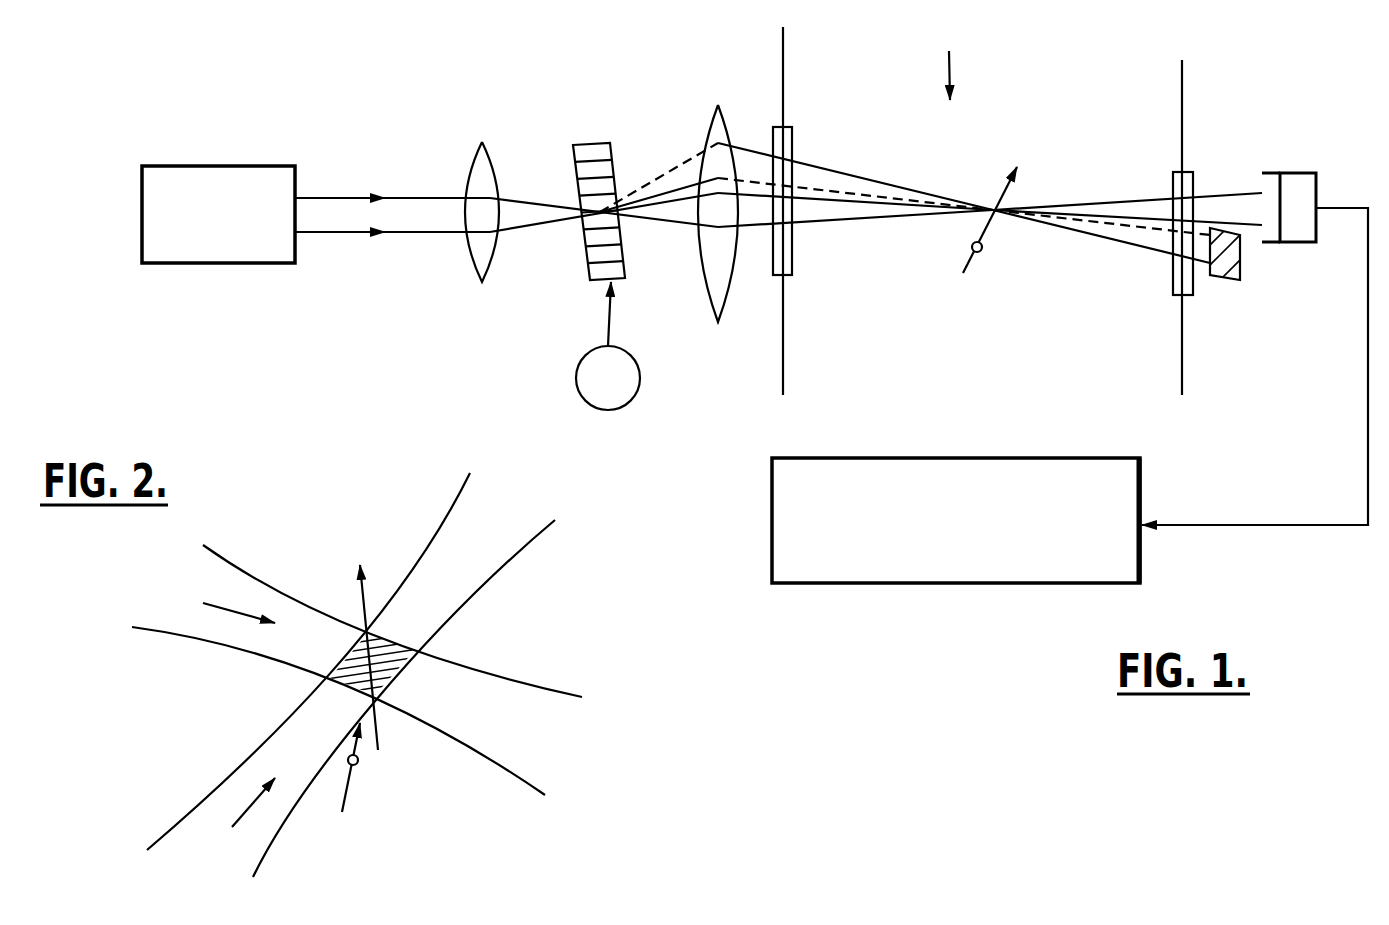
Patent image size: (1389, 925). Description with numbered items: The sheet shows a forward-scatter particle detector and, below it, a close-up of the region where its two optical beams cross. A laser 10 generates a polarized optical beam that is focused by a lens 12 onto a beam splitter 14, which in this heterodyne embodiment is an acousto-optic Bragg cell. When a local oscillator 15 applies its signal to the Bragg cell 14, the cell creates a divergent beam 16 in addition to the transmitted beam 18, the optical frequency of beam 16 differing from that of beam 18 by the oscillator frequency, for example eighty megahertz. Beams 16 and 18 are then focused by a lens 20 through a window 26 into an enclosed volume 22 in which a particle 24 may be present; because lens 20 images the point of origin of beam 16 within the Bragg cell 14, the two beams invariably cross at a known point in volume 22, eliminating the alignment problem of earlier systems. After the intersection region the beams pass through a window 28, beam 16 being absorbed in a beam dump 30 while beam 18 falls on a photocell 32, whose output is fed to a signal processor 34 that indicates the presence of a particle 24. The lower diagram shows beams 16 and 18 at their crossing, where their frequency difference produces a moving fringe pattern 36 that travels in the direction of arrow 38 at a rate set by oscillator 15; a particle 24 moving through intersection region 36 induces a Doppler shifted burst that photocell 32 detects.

In FIG. 1, the laser 10 is at (208, 164).
In FIG. 1, the lens 12 is at (468, 176).
In FIG. 1, the beam splitter 14 is at (590, 145).
In FIG. 1, the local oscillator 15 is at (575, 372).
In FIG. 1, the divergent beam 16 is at (676, 178).
In FIG. 2, the divergent beam 16 is at (217, 590).
In FIG. 1, the transmitted beam 18 is at (680, 214).
In FIG. 2, the transmitted beam 18 is at (288, 772).
In FIG. 1, the lens 20 is at (712, 130).
In FIG. 1, the enclosed volume 22 is at (948, 63).
In FIG. 1, the particle 24 is at (974, 252).
In FIG. 2, the particle 24 is at (359, 764).
In FIG. 1, the window 26 is at (793, 142).
In FIG. 1, the window 28 is at (1193, 172).
In FIG. 1, the beam dump 30 is at (1242, 265).
In FIG. 1, the photocell 32 is at (1297, 173).
In FIG. 1, the signal processor 34 is at (1068, 457).
In FIG. 2, the moving fringe pattern 36 is at (407, 643).
In FIG. 2, the arrow 38 is at (368, 572).